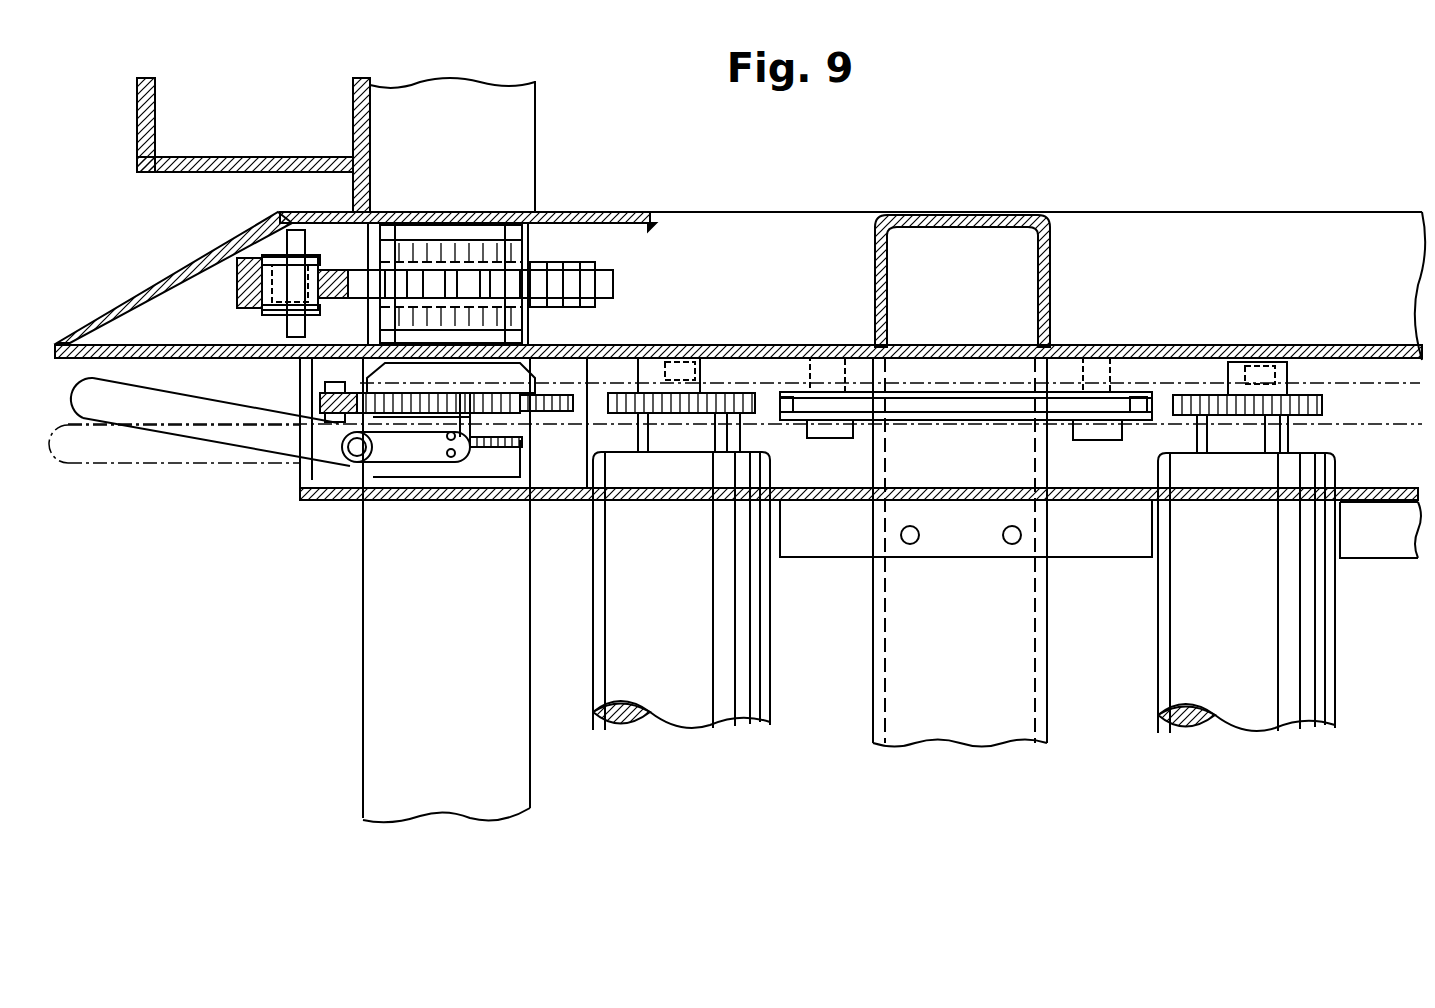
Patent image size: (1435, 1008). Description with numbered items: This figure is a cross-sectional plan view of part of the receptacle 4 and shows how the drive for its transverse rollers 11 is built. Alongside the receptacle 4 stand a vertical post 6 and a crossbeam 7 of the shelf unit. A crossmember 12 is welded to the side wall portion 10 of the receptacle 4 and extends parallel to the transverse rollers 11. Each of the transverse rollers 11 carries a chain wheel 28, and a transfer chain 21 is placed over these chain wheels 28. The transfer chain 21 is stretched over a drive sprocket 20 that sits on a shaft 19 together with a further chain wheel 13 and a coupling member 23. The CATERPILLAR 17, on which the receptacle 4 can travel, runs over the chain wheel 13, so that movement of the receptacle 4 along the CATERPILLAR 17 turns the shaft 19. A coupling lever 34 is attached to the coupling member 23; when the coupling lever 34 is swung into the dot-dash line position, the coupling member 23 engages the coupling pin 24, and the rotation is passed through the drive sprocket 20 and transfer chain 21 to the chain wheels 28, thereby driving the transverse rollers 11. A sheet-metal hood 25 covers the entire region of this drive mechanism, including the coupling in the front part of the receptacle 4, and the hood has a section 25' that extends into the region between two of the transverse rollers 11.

The receptacle 4 is at (1098, 212).
The vertical post 6 is at (163, 168).
The crossbeam 7 is at (377, 640).
The side wall portion 10 is at (790, 345).
The transverse rollers 11 is at (745, 665).
The crossmember 12 is at (1022, 652).
The chain wheel 13 is at (565, 275).
The CATERPILLAR 17 is at (240, 275).
The shaft 19 is at (478, 230).
The drive sprocket 20 is at (557, 415).
The transfer chain 21 is at (292, 403).
The coupling member 23 is at (488, 455).
The coupling pin 24 is at (515, 422).
The sheet-metal hood 25 is at (1100, 492).
The section of sheet-metal hood 25' is at (966, 563).
The chain wheels 28 is at (706, 393).
The coupling lever 34 is at (218, 428).